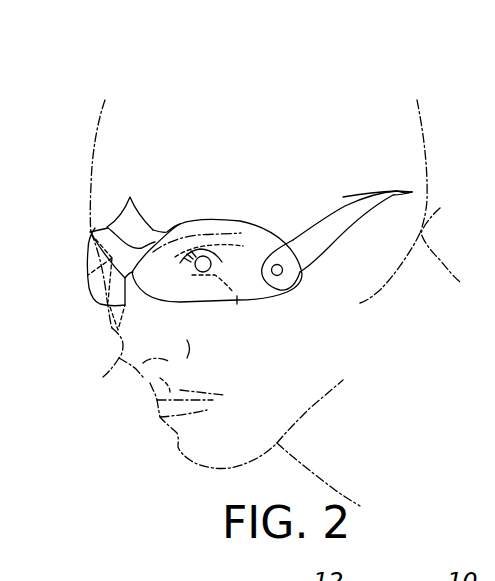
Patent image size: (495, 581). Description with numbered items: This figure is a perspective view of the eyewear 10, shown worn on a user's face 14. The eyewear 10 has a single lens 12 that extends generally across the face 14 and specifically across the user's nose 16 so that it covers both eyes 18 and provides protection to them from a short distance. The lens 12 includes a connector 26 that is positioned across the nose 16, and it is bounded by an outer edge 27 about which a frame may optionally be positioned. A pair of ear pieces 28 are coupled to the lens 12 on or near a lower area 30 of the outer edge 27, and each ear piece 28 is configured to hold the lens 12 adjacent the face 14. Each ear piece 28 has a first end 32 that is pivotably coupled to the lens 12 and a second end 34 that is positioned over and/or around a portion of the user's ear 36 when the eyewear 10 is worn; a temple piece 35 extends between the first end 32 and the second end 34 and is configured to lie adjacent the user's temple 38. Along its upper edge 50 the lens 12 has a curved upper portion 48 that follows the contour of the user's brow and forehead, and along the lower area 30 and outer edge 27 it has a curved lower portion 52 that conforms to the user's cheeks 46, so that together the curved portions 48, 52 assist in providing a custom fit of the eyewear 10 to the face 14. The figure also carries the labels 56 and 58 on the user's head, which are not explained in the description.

The eyewear 10 is at (85, 210).
The lens 12 is at (90, 227).
The user's face 14 is at (117, 435).
The user's nose 16 is at (115, 363).
The eyes 18 is at (70, 280).
The connector 26 is at (116, 306).
The outer edge 27 is at (130, 197).
The ear piece 28 is at (345, 197).
The lower area 30 is at (278, 288).
The first end 32 is at (284, 269).
The second end 34 is at (403, 191).
The temple piece 35 is at (318, 233).
The user's ear 36 is at (440, 208).
The user's temple 38 is at (310, 215).
The user's cheeks 46 is at (255, 367).
The curved upper portion 48 is at (173, 227).
The upper edge 50 is at (210, 220).
The curved lower portion 52 is at (261, 294).
The head 56 is at (410, 130).
The hair 58 is at (360, 107).